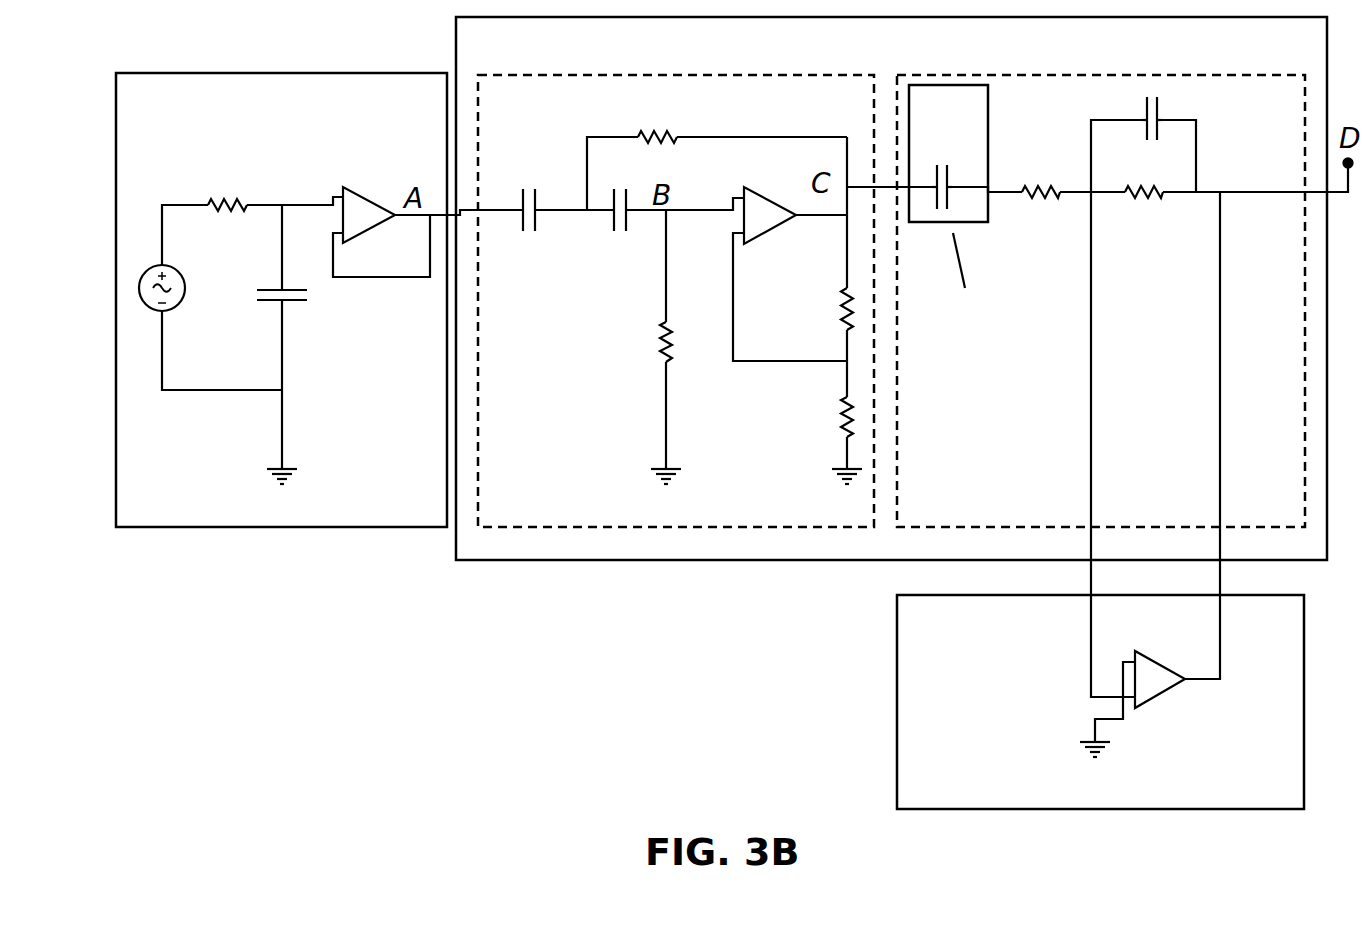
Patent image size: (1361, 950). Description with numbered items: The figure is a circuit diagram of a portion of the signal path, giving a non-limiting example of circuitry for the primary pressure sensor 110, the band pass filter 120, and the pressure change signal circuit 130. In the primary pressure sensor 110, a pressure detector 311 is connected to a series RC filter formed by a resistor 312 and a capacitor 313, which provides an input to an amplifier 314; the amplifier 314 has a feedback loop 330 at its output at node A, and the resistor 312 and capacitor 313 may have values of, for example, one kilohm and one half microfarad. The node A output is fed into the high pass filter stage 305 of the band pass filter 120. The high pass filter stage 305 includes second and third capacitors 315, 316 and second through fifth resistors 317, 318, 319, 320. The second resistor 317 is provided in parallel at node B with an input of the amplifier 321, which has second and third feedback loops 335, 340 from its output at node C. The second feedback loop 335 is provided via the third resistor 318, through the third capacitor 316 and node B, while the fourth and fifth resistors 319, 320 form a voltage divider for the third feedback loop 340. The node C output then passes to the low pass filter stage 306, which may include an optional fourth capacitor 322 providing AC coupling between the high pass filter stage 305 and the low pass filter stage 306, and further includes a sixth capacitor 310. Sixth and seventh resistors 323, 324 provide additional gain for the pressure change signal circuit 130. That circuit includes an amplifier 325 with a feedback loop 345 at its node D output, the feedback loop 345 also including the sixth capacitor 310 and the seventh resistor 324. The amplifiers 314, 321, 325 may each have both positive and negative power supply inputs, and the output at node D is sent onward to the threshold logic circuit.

The primary pressure sensor 110 is at (434, 115).
The band pass filter 120 is at (919, 62).
The pressure change signal circuit 130 is at (1291, 640).
The high pass filter stage 305 is at (861, 116).
The low pass filter stage 306 is at (1291, 115).
The sixth capacitor 310 is at (1138, 108).
The pressure detector 311 is at (153, 267).
The resistor 312 is at (227, 190).
The capacitor 313 is at (255, 290).
The amplifier 314 is at (370, 225).
The second capacitor 315 is at (518, 198).
The third capacitor 316 is at (602, 233).
The second resistor 317 is at (655, 345).
The third resistor 318 is at (648, 122).
The fourth resistor 319 is at (837, 313).
The fifth resistor 320 is at (838, 415).
The amplifier 321 is at (771, 225).
The fourth capacitor 322 is at (942, 163).
The sixth resistor 323 is at (1033, 187).
The seventh resistor 324 is at (1150, 210).
The amplifier 325 is at (1162, 689).
The feedback loop 330 is at (403, 290).
The second feedback loop 335 is at (777, 130).
The third feedback loop 340 is at (728, 338).
The feedback loop 345 is at (1210, 687).